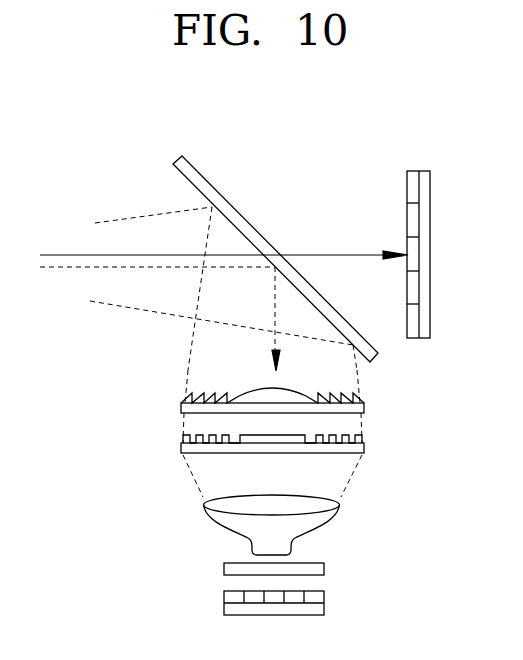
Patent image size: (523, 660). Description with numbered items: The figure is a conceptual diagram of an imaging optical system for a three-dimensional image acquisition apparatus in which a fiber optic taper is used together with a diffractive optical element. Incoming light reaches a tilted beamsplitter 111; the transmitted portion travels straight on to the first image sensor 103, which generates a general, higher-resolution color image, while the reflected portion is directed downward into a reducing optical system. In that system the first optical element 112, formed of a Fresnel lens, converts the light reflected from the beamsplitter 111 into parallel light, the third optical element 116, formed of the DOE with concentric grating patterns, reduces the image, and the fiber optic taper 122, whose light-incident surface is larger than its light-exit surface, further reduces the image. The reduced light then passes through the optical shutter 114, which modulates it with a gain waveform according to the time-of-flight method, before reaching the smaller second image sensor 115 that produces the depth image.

The first image sensor 103 is at (419, 170).
The beamsplitter 111 is at (215, 192).
The first optical element 112 is at (182, 407).
The third optical element 116 is at (182, 448).
The fiber optic taper 122 is at (204, 509).
The optical shutter 114 is at (224, 568).
The second image sensor 115 is at (224, 603).